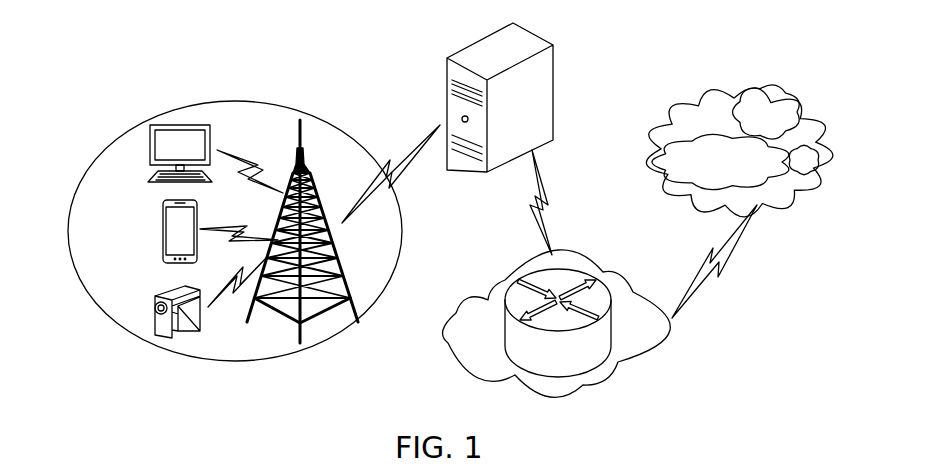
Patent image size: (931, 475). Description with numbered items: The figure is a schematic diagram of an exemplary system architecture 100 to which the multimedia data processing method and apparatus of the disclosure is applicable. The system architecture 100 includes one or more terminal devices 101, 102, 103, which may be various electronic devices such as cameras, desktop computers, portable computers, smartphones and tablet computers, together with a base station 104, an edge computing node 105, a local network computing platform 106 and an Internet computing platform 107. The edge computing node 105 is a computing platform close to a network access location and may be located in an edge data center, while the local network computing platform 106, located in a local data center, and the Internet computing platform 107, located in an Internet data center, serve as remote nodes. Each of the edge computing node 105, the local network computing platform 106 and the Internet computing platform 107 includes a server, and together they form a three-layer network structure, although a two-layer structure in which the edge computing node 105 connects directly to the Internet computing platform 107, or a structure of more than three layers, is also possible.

The system architecture 100 is at (101, 12).
The terminal device 101 is at (197, 159).
The terminal device 102 is at (194, 231).
The terminal device 103 is at (188, 297).
The base station 104 is at (343, 237).
The edge computing node 105 is at (500, 139).
The local network computing platform 106 is at (600, 301).
The Internet computing platform 107 is at (739, 165).